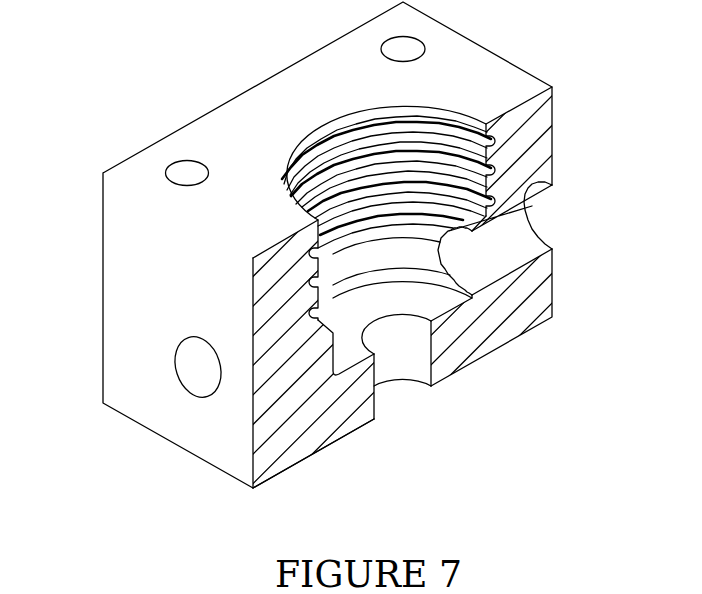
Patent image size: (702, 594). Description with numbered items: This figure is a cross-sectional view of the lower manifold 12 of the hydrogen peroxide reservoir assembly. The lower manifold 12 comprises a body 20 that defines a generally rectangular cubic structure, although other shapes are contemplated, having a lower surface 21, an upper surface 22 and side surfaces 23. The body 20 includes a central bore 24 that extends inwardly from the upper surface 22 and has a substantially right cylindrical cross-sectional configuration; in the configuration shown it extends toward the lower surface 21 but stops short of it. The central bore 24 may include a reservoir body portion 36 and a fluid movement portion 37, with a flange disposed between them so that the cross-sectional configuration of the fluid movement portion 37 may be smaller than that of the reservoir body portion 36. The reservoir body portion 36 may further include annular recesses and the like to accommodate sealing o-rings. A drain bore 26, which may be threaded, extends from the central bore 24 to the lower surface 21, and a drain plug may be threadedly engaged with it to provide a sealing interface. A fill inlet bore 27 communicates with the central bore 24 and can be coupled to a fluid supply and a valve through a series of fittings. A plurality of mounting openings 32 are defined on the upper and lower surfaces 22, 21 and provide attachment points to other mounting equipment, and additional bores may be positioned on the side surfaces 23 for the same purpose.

The lower manifold 12 is at (64, 361).
The body 20 is at (86, 289).
The lower surface 21 is at (178, 467).
The upper surface 22 is at (323, 60).
The side surfaces 23 is at (125, 248).
The central bore 24 is at (320, 142).
The drain bore 26 is at (401, 415).
The fill inlet bore 27 is at (568, 235).
The mounting openings 32 is at (161, 152).
The reservoir body portion 36 is at (486, 190).
The fluid movement portion 37 is at (459, 269).